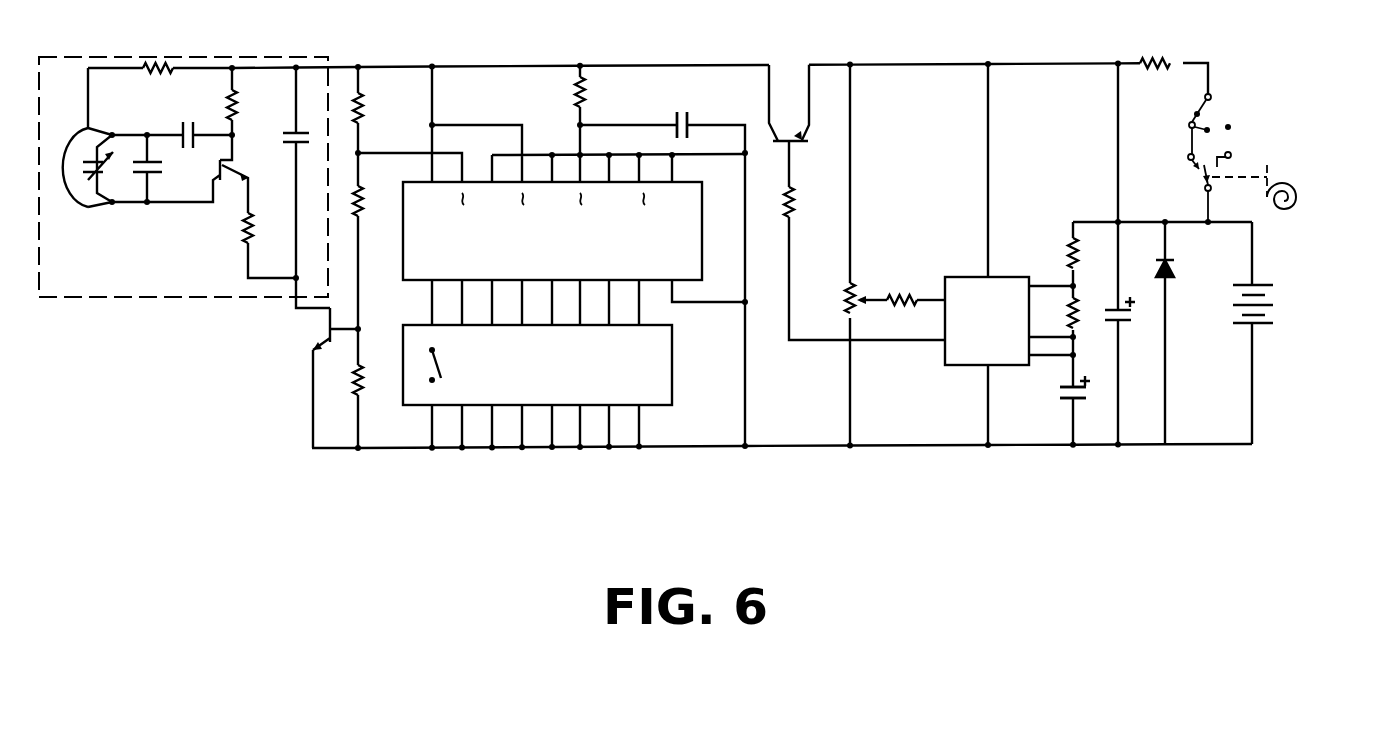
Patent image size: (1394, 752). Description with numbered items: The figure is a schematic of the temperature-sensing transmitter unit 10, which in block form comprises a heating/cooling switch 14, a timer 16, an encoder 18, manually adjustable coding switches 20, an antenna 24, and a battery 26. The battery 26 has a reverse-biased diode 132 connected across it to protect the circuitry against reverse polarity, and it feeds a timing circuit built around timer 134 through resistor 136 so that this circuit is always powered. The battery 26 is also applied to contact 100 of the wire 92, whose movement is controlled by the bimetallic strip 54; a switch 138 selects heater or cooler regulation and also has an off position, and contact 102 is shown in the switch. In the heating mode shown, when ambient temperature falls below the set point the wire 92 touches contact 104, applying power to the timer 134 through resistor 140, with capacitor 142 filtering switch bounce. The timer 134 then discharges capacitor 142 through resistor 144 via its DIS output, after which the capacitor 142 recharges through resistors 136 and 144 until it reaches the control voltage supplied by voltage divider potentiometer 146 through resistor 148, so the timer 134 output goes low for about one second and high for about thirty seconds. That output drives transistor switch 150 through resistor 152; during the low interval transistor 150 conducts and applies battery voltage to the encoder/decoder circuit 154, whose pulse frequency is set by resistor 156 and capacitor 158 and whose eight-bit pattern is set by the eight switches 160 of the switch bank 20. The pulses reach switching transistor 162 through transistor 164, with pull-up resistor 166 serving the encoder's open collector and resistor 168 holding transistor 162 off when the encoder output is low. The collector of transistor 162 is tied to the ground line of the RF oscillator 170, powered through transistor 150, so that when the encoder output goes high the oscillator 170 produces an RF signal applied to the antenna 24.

The temperature-sensing transmitter unit 10 is at (311, 459).
The heating/cooling switch 14 is at (1234, 149).
The timer 16 is at (968, 254).
The encoder 18 is at (553, 257).
The coding switches 20 is at (561, 365).
The antenna 24 is at (92, 209).
The battery 26 is at (1276, 306).
The bimetallic strip 54 is at (1294, 205).
The wire 92 is at (1205, 180).
The contact 100 is at (1209, 190).
The switch contact 102 is at (1229, 155).
The contact 104 is at (1190, 157).
The reverse-biased diode 132 is at (1174, 268).
The timer 134 is at (1000, 277).
The resistor 136 is at (1070, 239).
The switch 138 is at (1210, 99).
The resistor 140 is at (1157, 64).
The capacitor 142 is at (1060, 410).
The resistor 144 is at (1077, 302).
The voltage divider potentiometer 146 is at (848, 295).
The resistor 148 is at (894, 294).
The transistor switch 150 is at (791, 144).
The resistor 152 is at (792, 218).
The encoder/decoder circuit 154 is at (702, 222).
The resistor 156 is at (575, 95).
The capacitor 158 is at (689, 121).
The switch 160 is at (437, 368).
The switching transistor 162 is at (323, 329).
The transistor 164 is at (360, 218).
The pull-up resistor 166 is at (362, 100).
The resistor 168 is at (362, 395).
The RF oscillator 170 is at (175, 297).